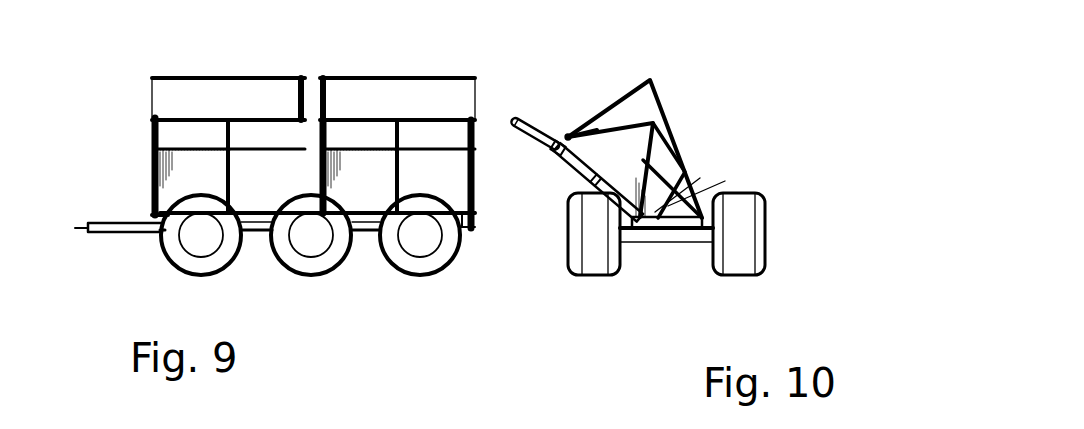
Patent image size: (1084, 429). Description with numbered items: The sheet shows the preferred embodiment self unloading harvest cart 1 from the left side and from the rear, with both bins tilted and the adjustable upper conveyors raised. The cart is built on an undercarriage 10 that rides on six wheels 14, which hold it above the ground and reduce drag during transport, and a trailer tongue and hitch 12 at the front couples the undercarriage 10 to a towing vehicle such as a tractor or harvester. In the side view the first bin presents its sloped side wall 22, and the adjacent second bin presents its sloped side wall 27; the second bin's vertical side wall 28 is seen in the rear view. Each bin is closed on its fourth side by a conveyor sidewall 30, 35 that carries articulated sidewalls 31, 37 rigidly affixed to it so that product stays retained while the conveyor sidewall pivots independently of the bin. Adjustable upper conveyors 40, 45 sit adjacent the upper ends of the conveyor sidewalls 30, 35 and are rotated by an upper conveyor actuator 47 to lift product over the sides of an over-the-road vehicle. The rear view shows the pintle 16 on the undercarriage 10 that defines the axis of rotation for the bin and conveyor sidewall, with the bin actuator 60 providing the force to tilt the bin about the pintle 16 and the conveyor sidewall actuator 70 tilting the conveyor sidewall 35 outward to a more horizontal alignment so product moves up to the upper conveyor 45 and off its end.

In FIG. 9, the self unloading harvest cart 1 is at (58, 62).
In FIG. 10, the self unloading harvest cart 1 is at (769, 80).
In FIG. 9, the undercarriage 10 is at (367, 237).
In FIG. 10, the undercarriage 10 is at (767, 245).
In FIG. 9, the trailer tongue and hitch 12 is at (116, 222).
In FIG. 9, the wheels 14 is at (185, 257).
In FIG. 10, the wheels 14 is at (600, 257).
In FIG. 10, the pintle 16 is at (657, 242).
In FIG. 9, the sloped side wall 22 is at (200, 96).
In FIG. 9, the sloped side wall 27 is at (383, 95).
In FIG. 10, the vertical side wall 28 is at (652, 107).
In FIG. 9, the conveyor sidewall 30 is at (247, 160).
In FIG. 9, the articulated sidewall 31 is at (150, 143).
In FIG. 9, the conveyor sidewall 35 is at (428, 162).
In FIG. 10, the conveyor sidewall 35 is at (597, 130).
In FIG. 9, the articulated sidewall 37 is at (474, 190).
In FIG. 10, the articulated sidewall 37 is at (567, 195).
In FIG. 9, the adjustable upper conveyor 40 is at (180, 138).
In FIG. 9, the adjustable upper conveyor 45 is at (373, 132).
In FIG. 10, the adjustable upper conveyor 45 is at (533, 130).
In FIG. 10, the upper conveyor actuator 47 is at (555, 153).
In FIG. 10, the bin actuator 60 is at (700, 178).
In FIG. 10, the conveyor sidewall actuator 70 is at (725, 181).